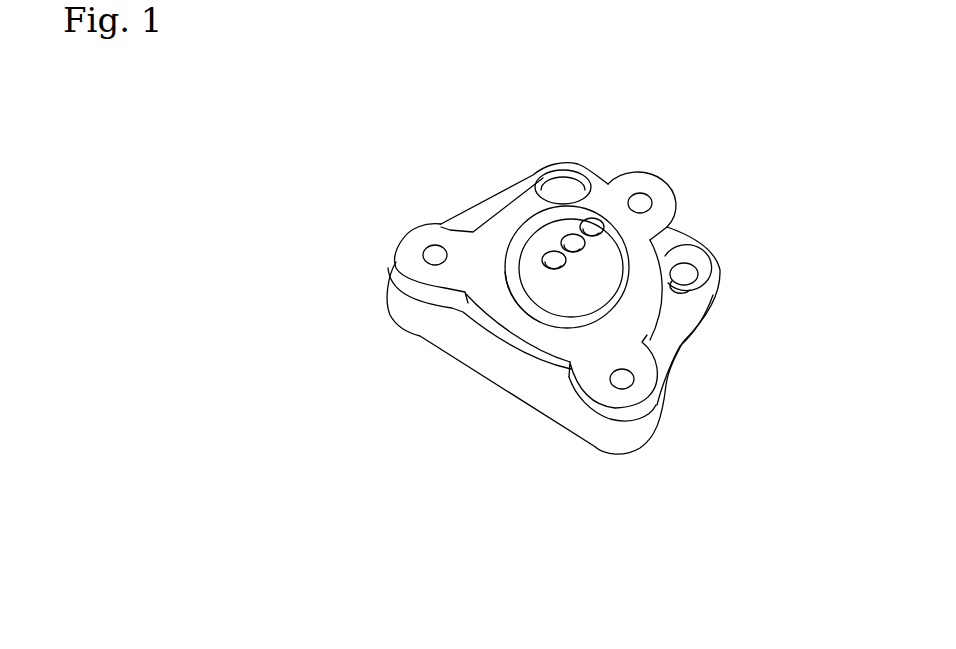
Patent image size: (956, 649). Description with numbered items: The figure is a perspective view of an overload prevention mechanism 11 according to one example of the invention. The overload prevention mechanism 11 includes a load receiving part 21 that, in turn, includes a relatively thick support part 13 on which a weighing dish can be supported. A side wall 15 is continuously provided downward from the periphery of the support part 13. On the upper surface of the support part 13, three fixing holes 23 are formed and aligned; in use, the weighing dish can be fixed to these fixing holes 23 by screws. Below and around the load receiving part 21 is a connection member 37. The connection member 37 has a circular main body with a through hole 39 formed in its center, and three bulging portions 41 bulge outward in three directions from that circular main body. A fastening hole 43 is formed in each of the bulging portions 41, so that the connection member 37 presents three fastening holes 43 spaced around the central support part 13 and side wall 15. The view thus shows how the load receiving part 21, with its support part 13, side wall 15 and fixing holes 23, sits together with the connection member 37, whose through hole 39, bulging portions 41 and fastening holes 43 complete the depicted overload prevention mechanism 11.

The overload prevention mechanism 11 is at (727, 210).
The support part 13 is at (548, 230).
The side wall 15 is at (513, 304).
The load receiving part 21 is at (638, 265).
The fixing holes 23 is at (591, 230).
The connection member 37 is at (657, 352).
The through hole 39 is at (538, 288).
The bulging portions 41 is at (434, 232).
The fastening holes 43 is at (432, 253).